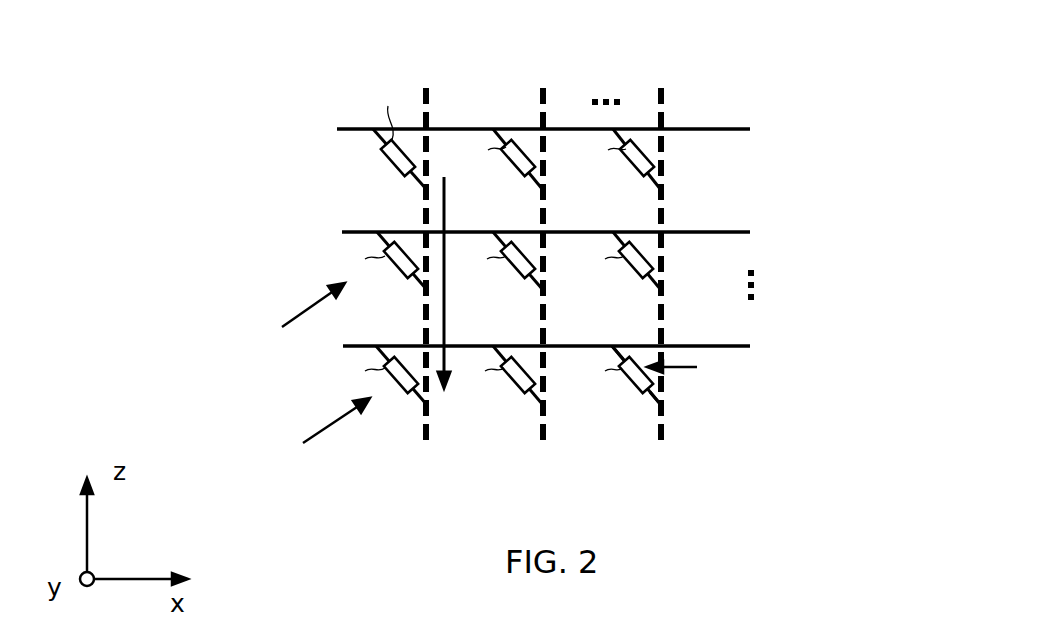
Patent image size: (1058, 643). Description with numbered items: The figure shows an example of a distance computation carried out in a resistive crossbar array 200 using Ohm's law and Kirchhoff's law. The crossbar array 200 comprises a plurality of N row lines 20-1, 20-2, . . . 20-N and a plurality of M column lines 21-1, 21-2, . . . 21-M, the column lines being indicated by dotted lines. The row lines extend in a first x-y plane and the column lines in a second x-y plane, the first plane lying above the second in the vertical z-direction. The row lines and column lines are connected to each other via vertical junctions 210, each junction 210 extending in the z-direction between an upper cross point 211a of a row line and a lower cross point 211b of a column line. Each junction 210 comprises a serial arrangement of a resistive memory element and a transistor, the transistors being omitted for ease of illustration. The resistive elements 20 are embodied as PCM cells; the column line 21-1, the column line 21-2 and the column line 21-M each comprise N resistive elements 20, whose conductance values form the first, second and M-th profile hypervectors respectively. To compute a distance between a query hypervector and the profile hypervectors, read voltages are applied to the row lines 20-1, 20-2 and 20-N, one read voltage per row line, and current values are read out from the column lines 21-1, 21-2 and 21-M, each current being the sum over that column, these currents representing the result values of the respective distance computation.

The resistive crossbar array 200 is at (874, 482).
The resistive element 20 is at (385, 163).
The row line 20-1 is at (750, 129).
The row line 20-2 is at (740, 232).
The row line 20-N is at (740, 346).
The column line 21-1 is at (428, 113).
The column line 21-2 is at (545, 113).
The column line 21-M is at (662, 113).
The vertical junction 210 is at (486, 370).
The upper cross point 211a is at (620, 346).
The lower cross point 211b is at (660, 405).